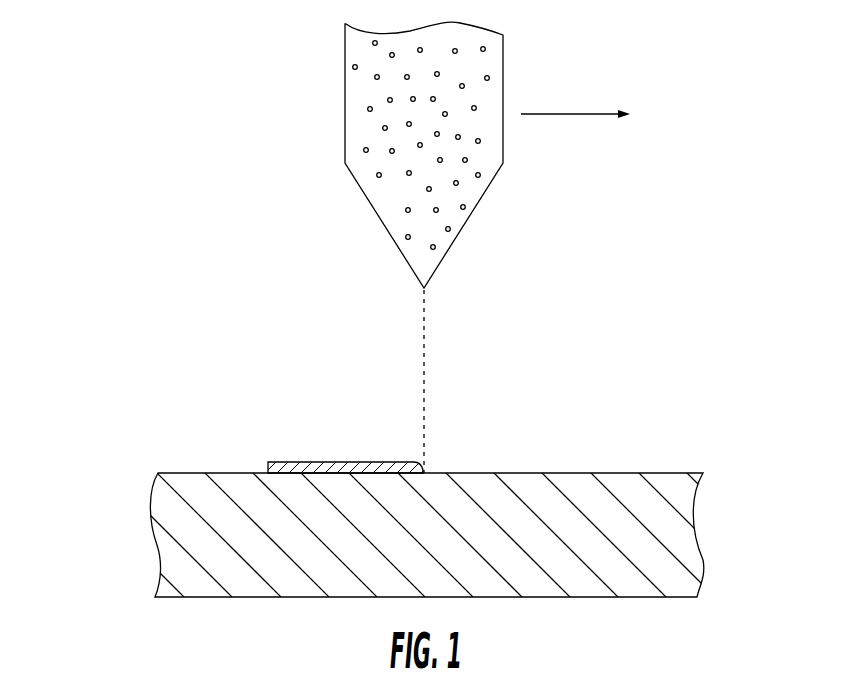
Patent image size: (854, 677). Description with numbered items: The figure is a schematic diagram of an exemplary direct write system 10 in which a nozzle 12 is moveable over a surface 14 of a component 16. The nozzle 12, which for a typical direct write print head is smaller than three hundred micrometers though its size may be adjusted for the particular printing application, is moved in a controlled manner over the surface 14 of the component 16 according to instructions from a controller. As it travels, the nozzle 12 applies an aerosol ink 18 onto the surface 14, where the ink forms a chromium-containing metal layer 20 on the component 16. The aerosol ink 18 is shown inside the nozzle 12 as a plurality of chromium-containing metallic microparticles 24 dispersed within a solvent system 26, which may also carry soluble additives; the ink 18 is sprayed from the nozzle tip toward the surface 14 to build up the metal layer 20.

The direct write system 10 is at (125, 66).
The nozzle 12 is at (503, 52).
The surface 14 is at (648, 465).
The component 16 is at (324, 565).
The aerosol ink 18 is at (440, 346).
The chromium-containing metal layer 20 is at (333, 461).
The chromium-containing metallic microparticles 24 is at (370, 78).
The solvent system 26 is at (478, 126).